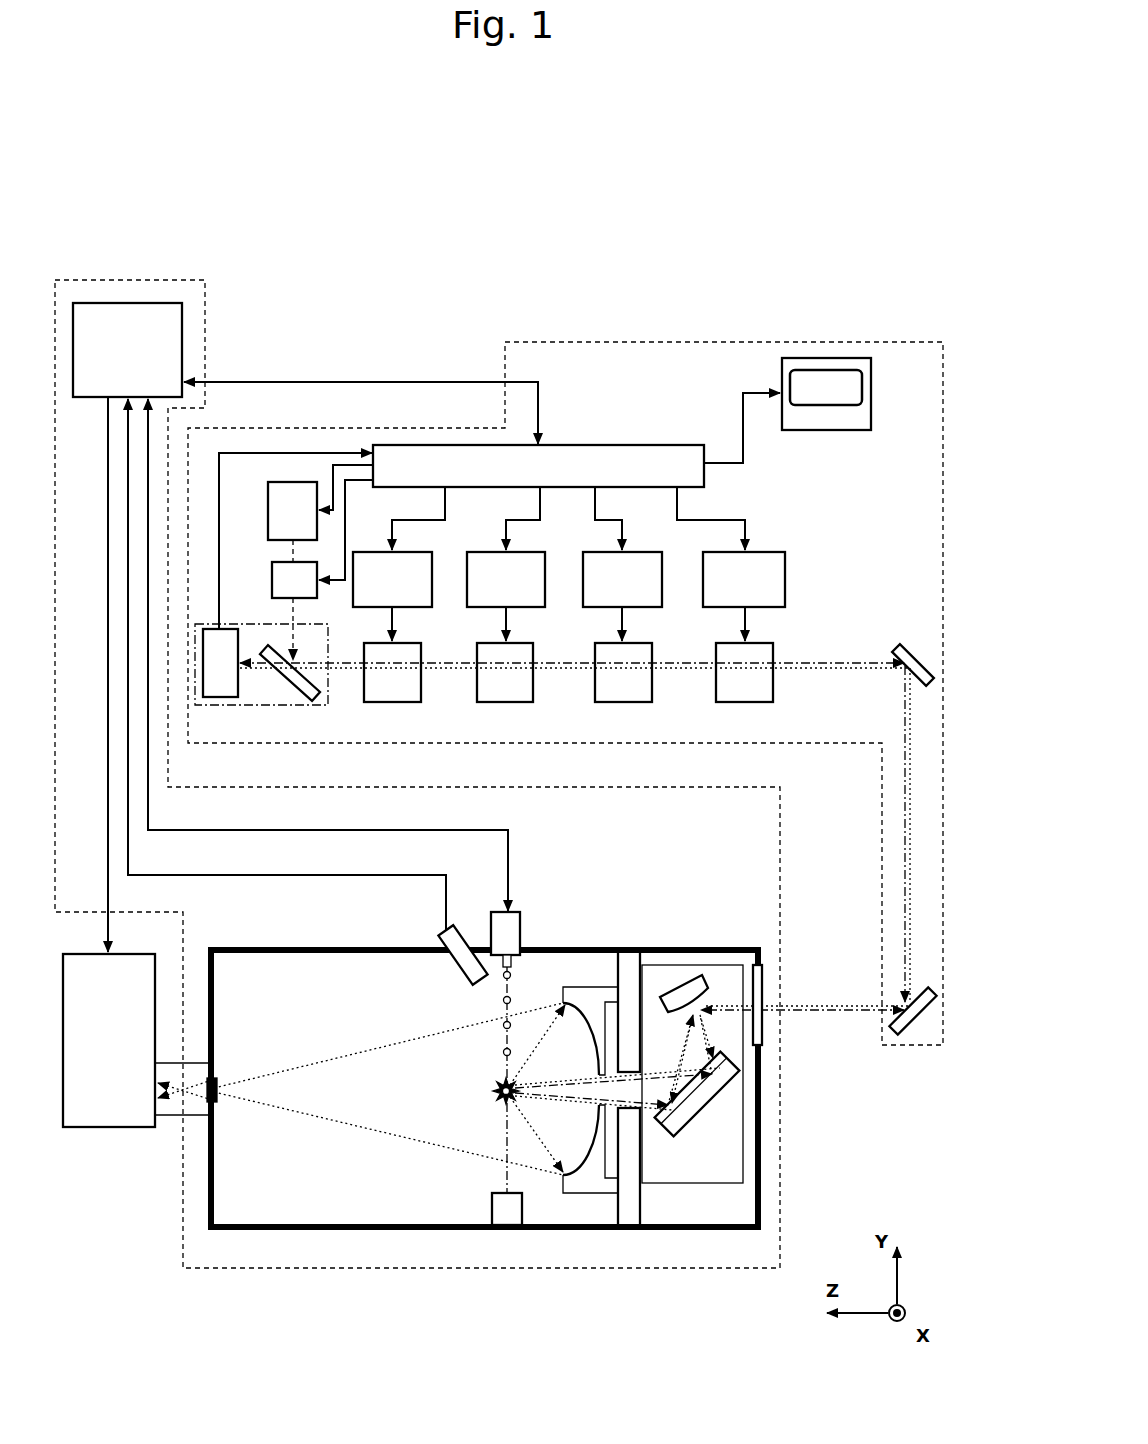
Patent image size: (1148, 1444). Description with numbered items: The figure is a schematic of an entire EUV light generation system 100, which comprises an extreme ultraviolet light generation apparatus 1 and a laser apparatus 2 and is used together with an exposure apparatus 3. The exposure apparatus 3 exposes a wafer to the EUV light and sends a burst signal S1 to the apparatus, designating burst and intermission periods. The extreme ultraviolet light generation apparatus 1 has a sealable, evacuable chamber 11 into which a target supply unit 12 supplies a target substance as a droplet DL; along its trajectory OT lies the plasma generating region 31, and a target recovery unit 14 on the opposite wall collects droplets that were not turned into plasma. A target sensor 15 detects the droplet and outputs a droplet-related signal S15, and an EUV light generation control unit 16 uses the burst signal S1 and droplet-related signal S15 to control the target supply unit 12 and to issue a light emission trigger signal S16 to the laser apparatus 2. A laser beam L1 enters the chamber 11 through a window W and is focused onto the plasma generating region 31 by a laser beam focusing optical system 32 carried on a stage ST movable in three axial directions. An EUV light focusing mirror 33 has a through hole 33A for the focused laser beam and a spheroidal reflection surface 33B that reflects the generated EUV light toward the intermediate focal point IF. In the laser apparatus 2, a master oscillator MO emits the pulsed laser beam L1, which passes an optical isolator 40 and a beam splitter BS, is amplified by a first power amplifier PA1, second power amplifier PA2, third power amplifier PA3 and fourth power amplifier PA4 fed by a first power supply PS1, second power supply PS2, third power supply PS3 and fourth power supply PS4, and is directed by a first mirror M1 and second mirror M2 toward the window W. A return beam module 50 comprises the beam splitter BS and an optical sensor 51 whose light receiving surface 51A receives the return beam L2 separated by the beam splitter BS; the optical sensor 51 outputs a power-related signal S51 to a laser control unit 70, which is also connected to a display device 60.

The EUV light generation system 100 is at (281, 182).
The extreme ultraviolet light generation apparatus 1 is at (131, 280).
The laser apparatus 2 is at (697, 342).
The exposure apparatus 3 is at (112, 1130).
The chamber 11 is at (676, 948).
The target supply unit 12 is at (521, 931).
The target recovery unit 14 is at (490, 1210).
The target sensor 15 is at (440, 938).
The EUV light generation control unit 16 is at (92, 399).
The plasma generating region 31 is at (493, 1093).
The laser beam focusing optical system 32 is at (711, 1130).
The EUV light focusing mirror 33 is at (600, 985).
The through hole 33A is at (590, 1107).
The spheroidal reflection surface 33B is at (592, 1043).
The optical isolator 40 is at (272, 579).
The return beam module 50 is at (310, 745).
The optical sensor 51 is at (222, 688).
The light receiving surface 51A is at (239, 677).
The display device 60 is at (830, 433).
The laser control unit 70 is at (601, 444).
The beam splitter BS is at (318, 684).
The droplet DL is at (502, 1052).
The intermediate focal point IF is at (190, 1088).
The laser beam L1 is at (828, 1003).
The return beam L2 is at (828, 1020).
The first mirror M1 is at (918, 655).
The second mirror M2 is at (922, 990).
The master oscillator MO is at (268, 514).
The trajectory OT is at (503, 1177).
The first power amplifier PA1 is at (422, 678).
The second power amplifier PA2 is at (534, 678).
The third power amplifier PA3 is at (653, 678).
The fourth power amplifier PA4 is at (774, 678).
The first power supply PS1 is at (433, 577).
The second power supply PS2 is at (546, 577).
The third power supply PS3 is at (663, 577).
The fourth power supply PS4 is at (786, 577).
The burst signal S1 is at (85, 674).
The droplet-related signal S15 is at (300, 876).
The light emission trigger signal S16 is at (349, 381).
The power-related signal S51 is at (270, 452).
The stage ST is at (668, 1163).
The window W is at (758, 964).